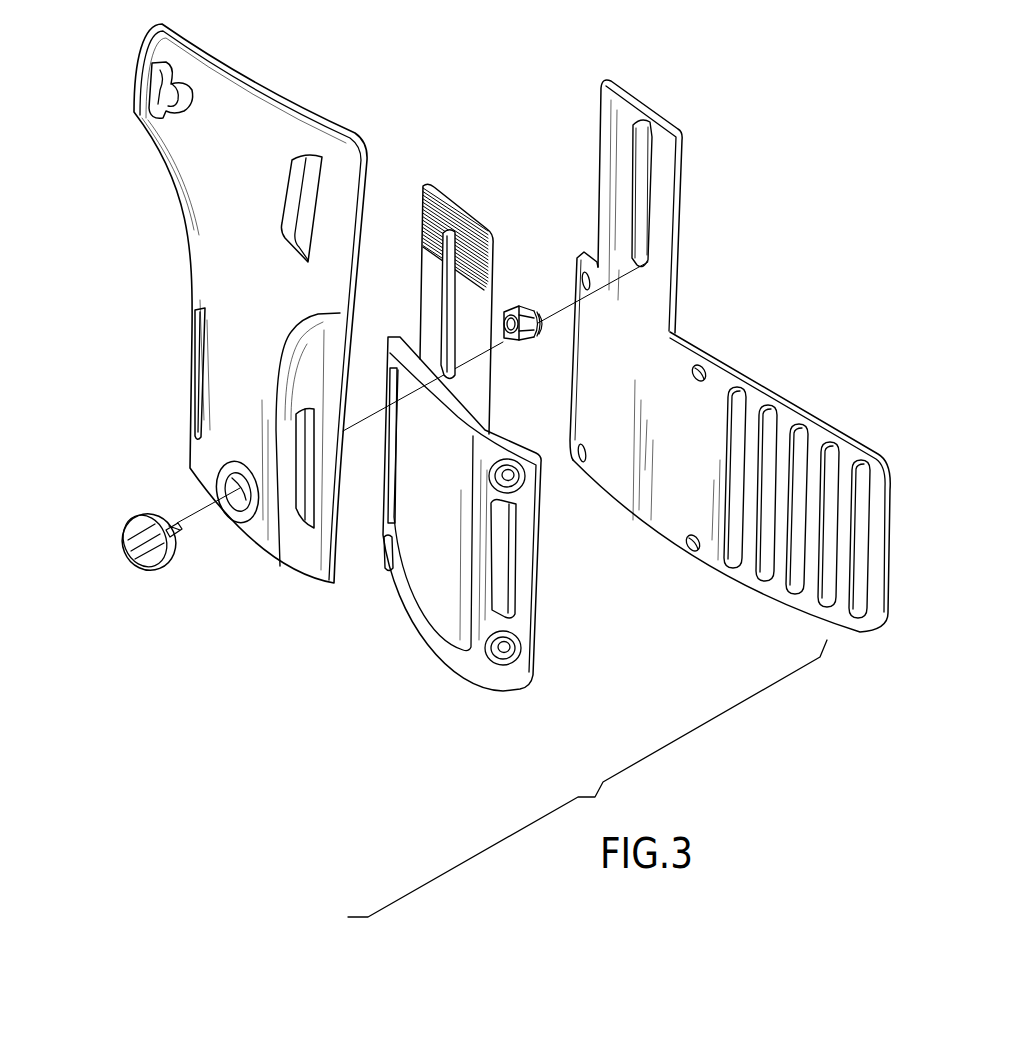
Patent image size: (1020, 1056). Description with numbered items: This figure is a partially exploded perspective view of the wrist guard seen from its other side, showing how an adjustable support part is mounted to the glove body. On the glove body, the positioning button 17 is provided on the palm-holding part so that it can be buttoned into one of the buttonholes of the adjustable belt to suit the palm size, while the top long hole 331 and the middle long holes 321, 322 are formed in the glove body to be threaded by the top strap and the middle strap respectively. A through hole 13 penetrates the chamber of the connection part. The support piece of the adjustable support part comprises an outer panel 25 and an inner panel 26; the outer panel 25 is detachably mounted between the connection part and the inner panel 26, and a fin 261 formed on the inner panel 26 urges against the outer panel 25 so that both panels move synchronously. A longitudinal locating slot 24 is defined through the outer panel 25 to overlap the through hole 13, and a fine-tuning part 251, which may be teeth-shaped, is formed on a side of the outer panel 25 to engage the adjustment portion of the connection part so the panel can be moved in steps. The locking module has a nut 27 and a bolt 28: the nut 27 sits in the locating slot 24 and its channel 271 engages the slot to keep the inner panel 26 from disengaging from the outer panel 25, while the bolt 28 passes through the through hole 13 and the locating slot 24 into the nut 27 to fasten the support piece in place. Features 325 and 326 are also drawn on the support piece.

The through hole 13 is at (240, 490).
The positioning button 17 is at (133, 106).
The longitudinal locating slot 24 is at (450, 302).
The outer panel 25 is at (447, 656).
The fine-tuning part 251 is at (420, 218).
The inner panel 26 is at (657, 493).
The fin 261 is at (680, 158).
The nut 27 is at (513, 343).
The channel 271 is at (543, 338).
The bolt 28 is at (132, 517).
The middle long hole 321 is at (200, 373).
The middle long hole 322 is at (306, 462).
The small slot 325 is at (393, 518).
The rectangular slot 326 is at (498, 593).
The top long hole 331 is at (316, 168).